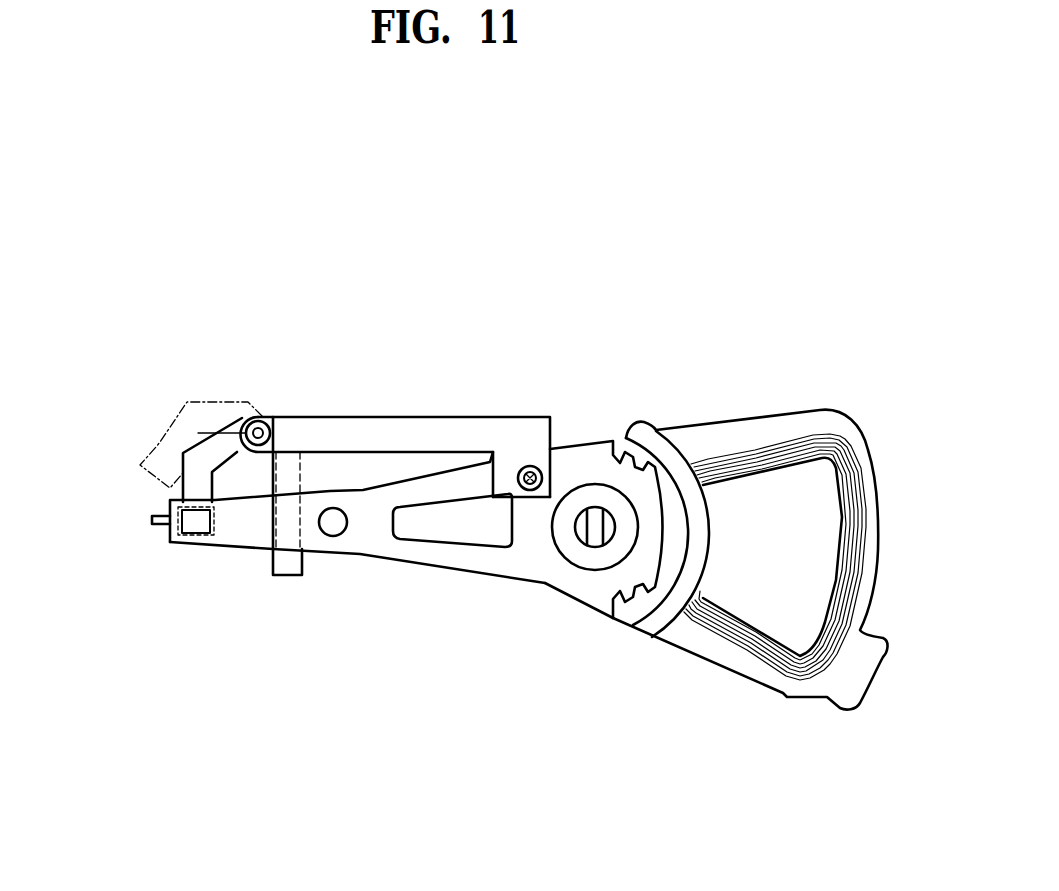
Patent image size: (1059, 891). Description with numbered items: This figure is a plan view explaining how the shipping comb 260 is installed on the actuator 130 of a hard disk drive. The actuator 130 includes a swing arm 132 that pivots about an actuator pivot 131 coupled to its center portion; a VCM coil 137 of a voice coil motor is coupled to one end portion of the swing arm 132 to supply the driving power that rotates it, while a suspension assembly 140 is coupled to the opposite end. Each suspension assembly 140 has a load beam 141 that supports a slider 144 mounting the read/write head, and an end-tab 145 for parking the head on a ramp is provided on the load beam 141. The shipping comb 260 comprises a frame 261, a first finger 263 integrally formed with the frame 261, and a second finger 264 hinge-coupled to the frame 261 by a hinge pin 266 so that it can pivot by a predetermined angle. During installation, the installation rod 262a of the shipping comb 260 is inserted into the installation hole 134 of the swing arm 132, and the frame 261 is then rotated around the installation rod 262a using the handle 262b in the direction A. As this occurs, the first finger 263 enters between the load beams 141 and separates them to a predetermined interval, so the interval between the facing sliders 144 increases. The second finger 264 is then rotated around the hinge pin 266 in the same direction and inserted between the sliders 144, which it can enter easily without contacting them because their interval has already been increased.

The actuator 130 is at (750, 525).
The actuator pivot 131 is at (595, 545).
The swing arm 132 is at (528, 565).
The installation hole 134 is at (542, 468).
The VCM coil 137 is at (785, 657).
The suspension assembly 140 is at (303, 568).
The load beam 141 is at (243, 535).
The slider 144 is at (198, 537).
The end-tab 145 is at (152, 521).
The shipping comb 260 is at (403, 481).
The frame 261 is at (362, 433).
The installation rod 262a is at (530, 466).
The handle 262b is at (512, 497).
The first finger 263 is at (288, 572).
The second finger 264 is at (205, 458).
The hinge pin 266 is at (257, 420).